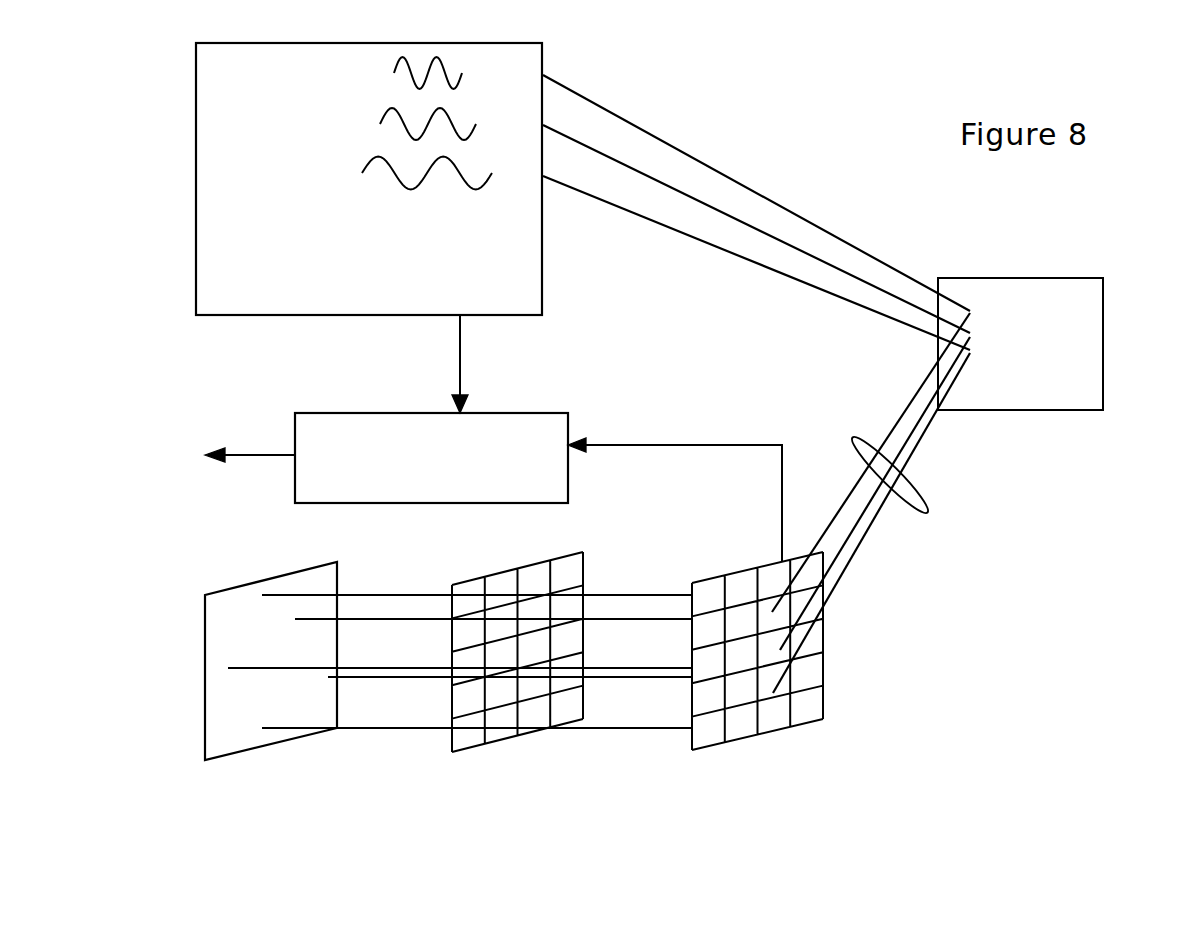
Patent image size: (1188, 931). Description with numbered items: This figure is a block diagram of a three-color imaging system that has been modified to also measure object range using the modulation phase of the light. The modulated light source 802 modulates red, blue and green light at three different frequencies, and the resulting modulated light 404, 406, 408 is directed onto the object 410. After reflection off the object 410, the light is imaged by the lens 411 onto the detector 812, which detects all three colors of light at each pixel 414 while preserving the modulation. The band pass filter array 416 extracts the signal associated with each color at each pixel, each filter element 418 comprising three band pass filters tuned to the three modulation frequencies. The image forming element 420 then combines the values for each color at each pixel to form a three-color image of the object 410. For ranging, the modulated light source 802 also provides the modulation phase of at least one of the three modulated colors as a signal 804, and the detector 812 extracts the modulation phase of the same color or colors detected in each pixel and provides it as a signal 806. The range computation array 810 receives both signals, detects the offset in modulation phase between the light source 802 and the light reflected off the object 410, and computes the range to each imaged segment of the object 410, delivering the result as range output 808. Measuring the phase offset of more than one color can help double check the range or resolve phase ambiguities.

The modulated light source 802 is at (369, 179).
The modulation phase signal 804 is at (482, 364).
The detected modulation phase signal 806 is at (675, 499).
The range output 808 is at (250, 444).
The range computation array 810 is at (431, 458).
The modulated light 404 is at (690, 157).
The modulated light 406 is at (745, 223).
The modulated light 408 is at (802, 280).
The object 410 is at (1020, 344).
The lens 411 is at (922, 475).
The pixel 414 is at (807, 708).
The band pass filter array 416 is at (548, 668).
The filter element 418 is at (577, 567).
The image forming element 420 is at (448, 715).
The detector 812 is at (788, 717).